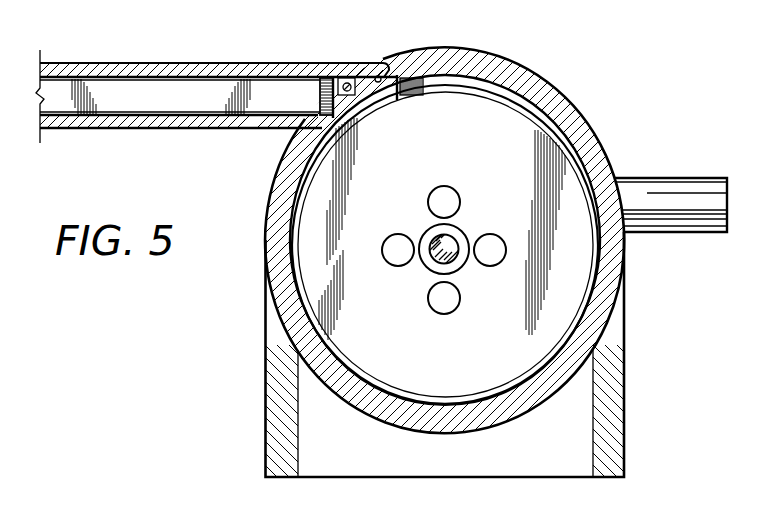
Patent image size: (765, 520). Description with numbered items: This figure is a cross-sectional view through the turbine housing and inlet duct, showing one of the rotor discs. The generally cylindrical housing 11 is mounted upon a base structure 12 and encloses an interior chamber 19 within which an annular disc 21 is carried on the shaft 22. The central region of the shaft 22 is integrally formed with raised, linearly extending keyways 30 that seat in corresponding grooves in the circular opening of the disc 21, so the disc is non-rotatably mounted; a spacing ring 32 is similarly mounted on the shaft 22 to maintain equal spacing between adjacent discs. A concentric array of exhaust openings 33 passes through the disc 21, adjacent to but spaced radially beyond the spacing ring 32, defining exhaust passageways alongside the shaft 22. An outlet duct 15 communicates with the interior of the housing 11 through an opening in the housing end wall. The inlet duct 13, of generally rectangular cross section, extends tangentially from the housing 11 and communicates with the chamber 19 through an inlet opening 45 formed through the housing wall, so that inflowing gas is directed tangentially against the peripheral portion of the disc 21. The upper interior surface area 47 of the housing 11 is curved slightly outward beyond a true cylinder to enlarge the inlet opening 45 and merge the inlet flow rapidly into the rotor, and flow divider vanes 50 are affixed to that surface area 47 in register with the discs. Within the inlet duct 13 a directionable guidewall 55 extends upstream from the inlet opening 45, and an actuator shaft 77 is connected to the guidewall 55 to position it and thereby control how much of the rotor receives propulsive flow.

The housing 11 is at (573, 109).
The base structure 12 is at (627, 383).
The inlet duct 13 is at (114, 63).
The second outlet duct 15 is at (660, 178).
The interior chamber 19 is at (293, 248).
The annular disc 21 is at (422, 163).
The shaft 22 is at (433, 245).
The keyway 30 is at (455, 268).
The spacing ring 32 is at (430, 265).
The exhaust opening 33 is at (460, 204).
The inlet opening 45 is at (377, 76).
The upper interior surface area 47 is at (470, 80).
The flow divider vane 50 is at (427, 84).
The directionable guidewall 55 is at (187, 80).
The actuator shaft 77 is at (332, 77).